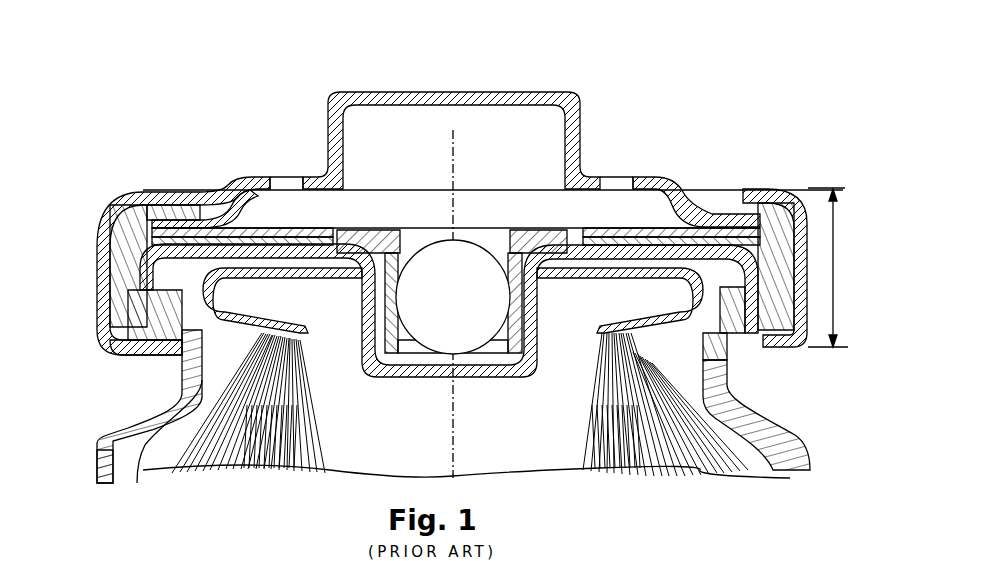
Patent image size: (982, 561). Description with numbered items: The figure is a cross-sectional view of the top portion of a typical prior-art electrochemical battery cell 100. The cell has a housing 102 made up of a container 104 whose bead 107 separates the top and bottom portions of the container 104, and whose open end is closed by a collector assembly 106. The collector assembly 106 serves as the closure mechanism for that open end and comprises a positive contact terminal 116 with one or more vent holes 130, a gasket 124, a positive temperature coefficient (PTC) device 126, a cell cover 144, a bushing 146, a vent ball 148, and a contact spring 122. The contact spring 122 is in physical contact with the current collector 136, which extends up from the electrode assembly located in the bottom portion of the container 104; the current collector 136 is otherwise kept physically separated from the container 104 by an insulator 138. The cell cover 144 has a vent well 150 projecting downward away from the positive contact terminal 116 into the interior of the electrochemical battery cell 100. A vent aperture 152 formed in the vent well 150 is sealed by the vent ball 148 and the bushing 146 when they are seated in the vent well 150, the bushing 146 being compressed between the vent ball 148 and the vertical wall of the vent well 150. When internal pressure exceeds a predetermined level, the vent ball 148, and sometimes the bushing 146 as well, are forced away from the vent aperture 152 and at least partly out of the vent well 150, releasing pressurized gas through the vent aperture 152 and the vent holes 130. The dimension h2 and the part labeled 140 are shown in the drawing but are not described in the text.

The electrochemical battery cell 100 is at (228, 120).
The housing 102 is at (80, 213).
The container 104 is at (95, 475).
The collector assembly 106 is at (642, 145).
The bead 107 is at (118, 412).
The positive contact terminal 116 is at (573, 92).
The contact spring 122 is at (547, 360).
The gasket 124 is at (147, 212).
The positive temperature coefficient (PTC) device 126 is at (97, 237).
The vent holes 130 is at (288, 190).
The current collector 136 is at (730, 360).
The insulator 138 is at (777, 440).
The right lower block 140 is at (745, 348).
The cell cover 144 is at (120, 342).
The bushing 146 is at (330, 243).
The vent ball 148 is at (427, 323).
The vent well 150 is at (373, 318).
The vent aperture 152 is at (483, 347).